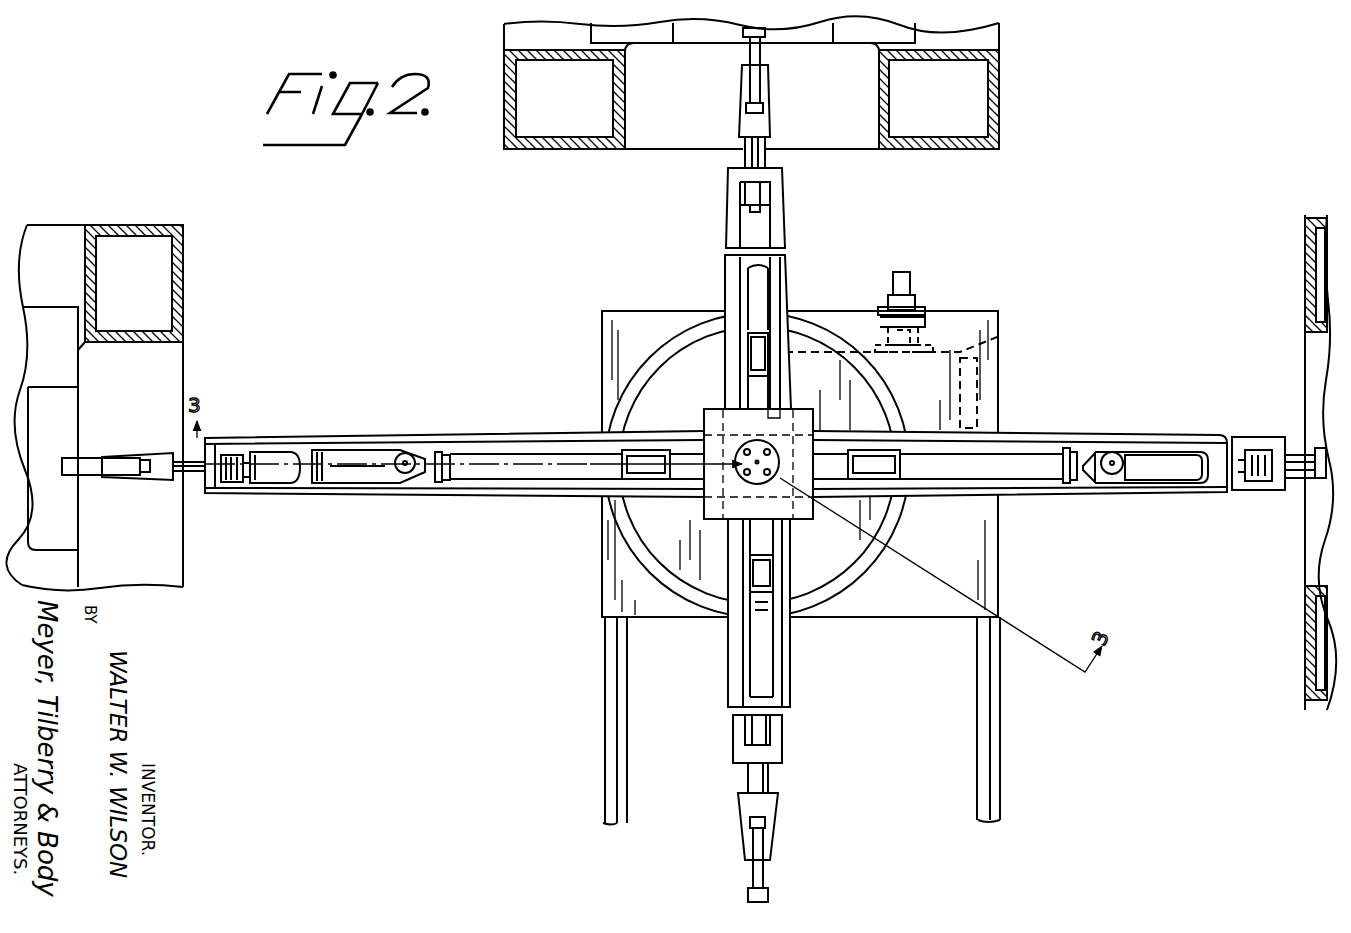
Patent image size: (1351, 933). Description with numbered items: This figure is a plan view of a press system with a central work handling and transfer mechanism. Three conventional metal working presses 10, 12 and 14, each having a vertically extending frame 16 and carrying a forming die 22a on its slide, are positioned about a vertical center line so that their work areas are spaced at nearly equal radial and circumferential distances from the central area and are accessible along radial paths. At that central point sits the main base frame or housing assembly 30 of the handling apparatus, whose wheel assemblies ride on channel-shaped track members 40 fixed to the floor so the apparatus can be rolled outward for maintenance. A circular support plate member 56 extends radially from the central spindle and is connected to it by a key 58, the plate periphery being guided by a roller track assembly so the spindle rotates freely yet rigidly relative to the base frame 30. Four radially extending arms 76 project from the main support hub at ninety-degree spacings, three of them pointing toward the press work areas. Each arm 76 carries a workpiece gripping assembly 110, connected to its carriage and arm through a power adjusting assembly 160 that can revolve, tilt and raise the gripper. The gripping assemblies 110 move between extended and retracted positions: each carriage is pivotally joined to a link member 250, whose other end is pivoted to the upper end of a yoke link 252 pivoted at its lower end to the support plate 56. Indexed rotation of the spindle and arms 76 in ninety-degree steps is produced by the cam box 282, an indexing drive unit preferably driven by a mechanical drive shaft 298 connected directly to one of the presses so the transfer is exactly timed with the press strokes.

The metal working press 10 is at (203, 320).
The metal working press 12 is at (698, 160).
The metal working press 14 is at (1255, 401).
The vertically extending frame 16 is at (540, 150).
The forming die 22a is at (704, 38).
The main base frame or housing assembly 30 is at (900, 622).
The channel-shaped track members 40 is at (605, 760).
The circular support flange or plate member 56 is at (842, 560).
The key 58 is at (893, 540).
The radially extending arms 76 is at (792, 280).
The workpiece gripping assembly 110 is at (778, 154).
The power adjusting assembly 160 is at (712, 108).
The link member 250 is at (348, 485).
The yoke link 252 is at (752, 294).
The cam box 282 is at (997, 345).
The mechanical drive shaft 298 is at (908, 272).